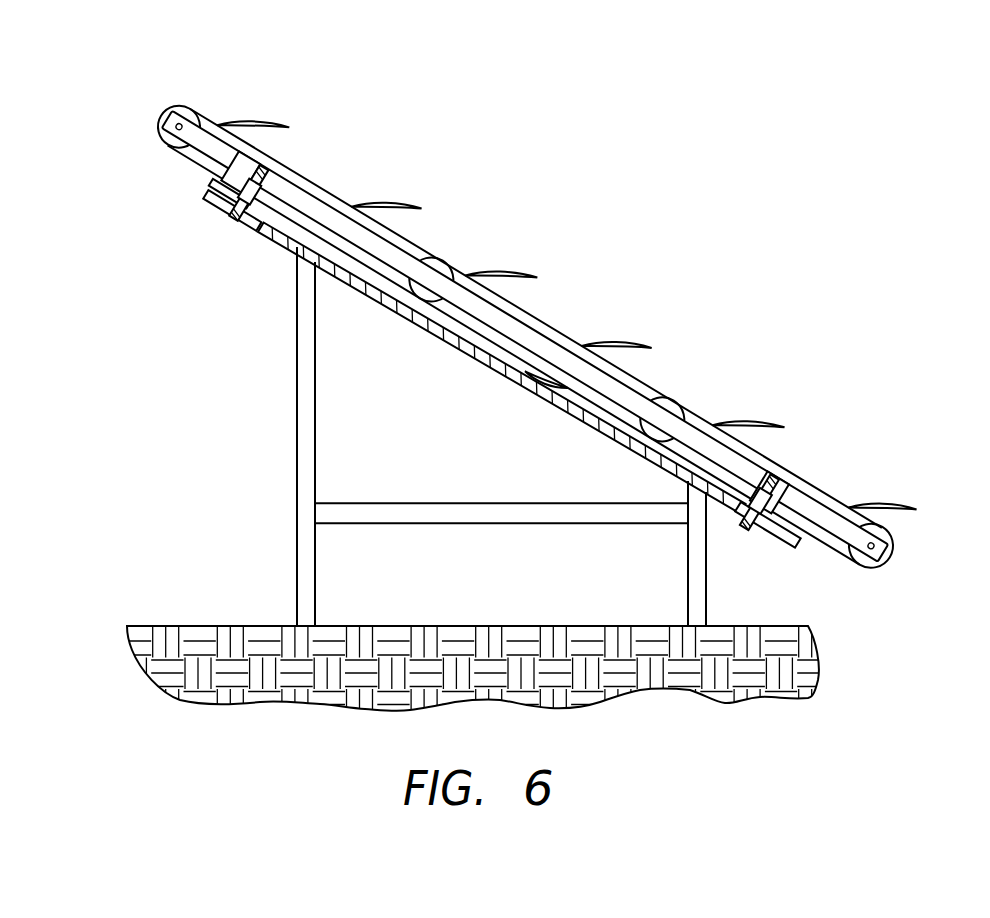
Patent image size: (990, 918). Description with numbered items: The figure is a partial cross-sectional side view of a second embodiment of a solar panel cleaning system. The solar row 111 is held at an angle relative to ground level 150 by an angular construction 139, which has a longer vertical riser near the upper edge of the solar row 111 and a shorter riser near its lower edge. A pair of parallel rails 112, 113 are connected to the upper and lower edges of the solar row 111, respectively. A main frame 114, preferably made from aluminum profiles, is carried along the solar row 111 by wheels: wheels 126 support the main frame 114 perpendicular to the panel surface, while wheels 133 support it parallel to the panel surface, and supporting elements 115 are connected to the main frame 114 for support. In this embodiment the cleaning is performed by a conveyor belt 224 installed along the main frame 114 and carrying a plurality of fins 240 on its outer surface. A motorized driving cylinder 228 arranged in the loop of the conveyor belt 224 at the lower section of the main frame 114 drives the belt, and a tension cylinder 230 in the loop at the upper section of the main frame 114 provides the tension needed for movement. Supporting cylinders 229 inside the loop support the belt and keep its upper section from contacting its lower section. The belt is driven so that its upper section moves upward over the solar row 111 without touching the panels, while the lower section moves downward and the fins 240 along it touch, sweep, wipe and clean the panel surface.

The solar row 111 is at (478, 361).
The rail 112 is at (241, 234).
The rail 113 is at (747, 523).
The main frame 114 is at (226, 177).
The supporting elements 115 is at (222, 191).
The wheels 126 is at (767, 481).
The wheels 133 is at (204, 206).
The angular construction 139 is at (297, 396).
The ground level 150 is at (206, 625).
The conveyor belt 224 is at (312, 184).
The motorized driving cylinder 228 is at (873, 566).
The supporting cylinders 229 is at (457, 269).
The tension cylinder 230 is at (164, 118).
The fins 240 is at (258, 125).